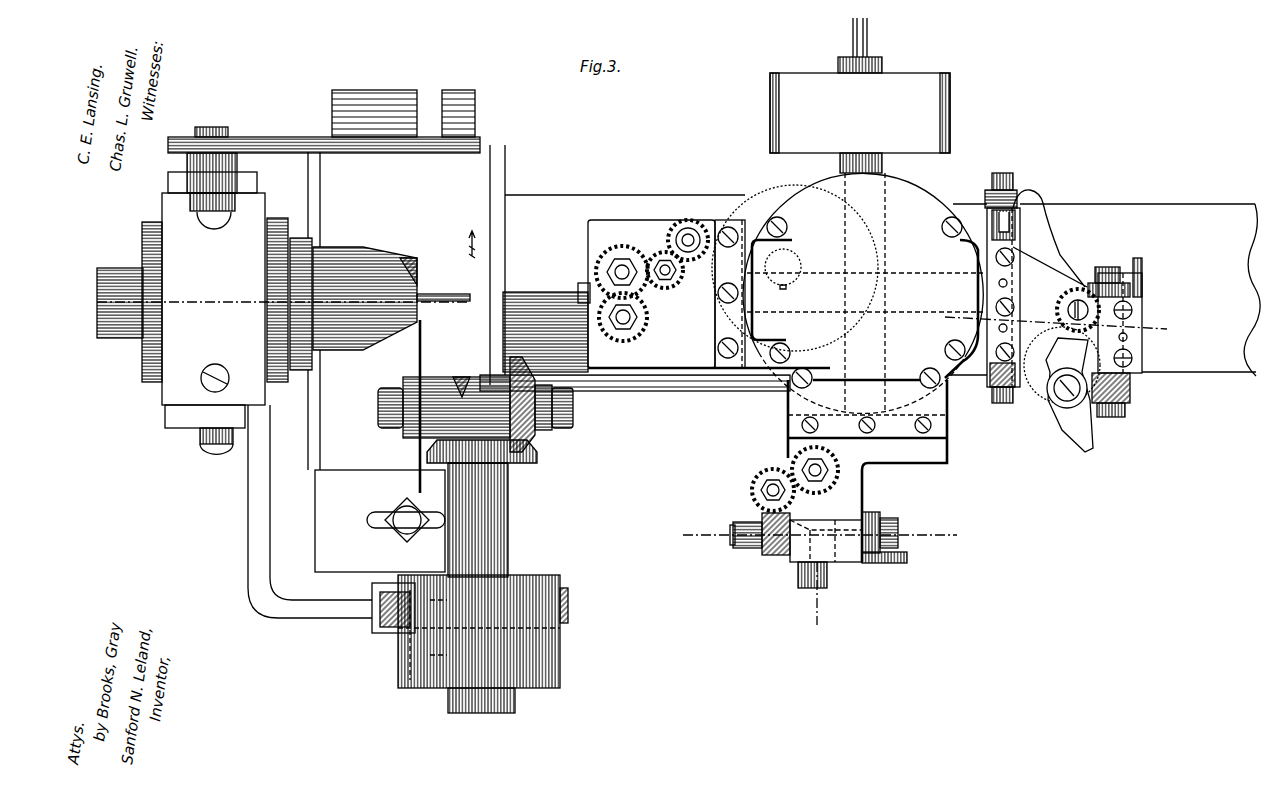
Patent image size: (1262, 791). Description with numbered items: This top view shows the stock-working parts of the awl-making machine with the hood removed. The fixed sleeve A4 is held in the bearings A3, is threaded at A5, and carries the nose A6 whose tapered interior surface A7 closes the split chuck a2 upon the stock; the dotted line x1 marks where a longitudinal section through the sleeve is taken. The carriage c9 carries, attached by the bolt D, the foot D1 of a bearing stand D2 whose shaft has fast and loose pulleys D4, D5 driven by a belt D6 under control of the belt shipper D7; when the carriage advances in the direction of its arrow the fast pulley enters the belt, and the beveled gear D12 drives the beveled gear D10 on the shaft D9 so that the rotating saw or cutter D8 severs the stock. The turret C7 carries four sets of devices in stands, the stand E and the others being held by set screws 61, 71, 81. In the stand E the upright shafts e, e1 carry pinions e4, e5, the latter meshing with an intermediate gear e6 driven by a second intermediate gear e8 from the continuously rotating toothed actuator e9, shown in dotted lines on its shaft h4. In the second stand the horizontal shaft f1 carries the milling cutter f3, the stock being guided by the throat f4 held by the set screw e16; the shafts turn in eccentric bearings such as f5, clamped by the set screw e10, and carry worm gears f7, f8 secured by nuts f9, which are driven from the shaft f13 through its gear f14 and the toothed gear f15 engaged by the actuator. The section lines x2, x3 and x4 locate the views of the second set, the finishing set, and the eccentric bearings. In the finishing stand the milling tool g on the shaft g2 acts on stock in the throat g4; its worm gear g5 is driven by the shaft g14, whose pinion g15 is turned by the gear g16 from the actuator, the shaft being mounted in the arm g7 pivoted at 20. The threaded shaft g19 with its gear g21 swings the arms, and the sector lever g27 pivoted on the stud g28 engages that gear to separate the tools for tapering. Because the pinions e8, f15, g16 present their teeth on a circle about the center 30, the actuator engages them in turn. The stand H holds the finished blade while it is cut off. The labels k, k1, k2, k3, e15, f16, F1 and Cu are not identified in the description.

The clamp bar k is at (268, 141).
The clamp screw k1 is at (215, 130).
The clamp screw stud k2 is at (190, 200).
The wires k3 is at (853, 42).
The bearings A3 is at (160, 222).
The sleeve A4 is at (143, 268).
The screw thread A5 is at (288, 220).
The nose A6 is at (360, 252).
The tapered surface A7 is at (566, 199).
The chuck a2 is at (416, 270).
The section line x1 is at (470, 297).
The carriage c9 is at (497, 170).
The bolt D is at (400, 530).
The foot D1 is at (322, 488).
The bearing stand D2 is at (509, 513).
The fast pulley D4 is at (562, 668).
The loose pulley D5 is at (561, 578).
The belt D6 is at (570, 604).
The belt shipper D7 is at (345, 617).
The cutter D8 is at (418, 372).
The cutter shaft D9 is at (460, 375).
The beveled gear D10 is at (543, 448).
The beveled gear D12 is at (524, 465).
The stand E is at (680, 360).
The upright shaft e is at (638, 318).
The upright shaft e1 is at (616, 272).
The pinion e4 is at (640, 333).
The pinion e5 is at (608, 262).
The intermediate gear e6 is at (672, 283).
The intermediate gear e8 is at (688, 222).
The toothed wheel actuator e9 is at (790, 190).
The set screw e10 is at (818, 590).
The pin e15 is at (848, 510).
The set screw e16 is at (862, 564).
The shaft f1 is at (736, 542).
The milling cutter f3 is at (750, 528).
The throat f4 is at (882, 558).
The eccentric bearing f5 is at (790, 556).
The worm toothed gear f7 is at (800, 525).
The worm toothed gear f8 is at (880, 514).
The nuts f9 is at (752, 519).
The shaft f13 is at (752, 489).
The gear f14 is at (766, 470).
The toothed gear f15 is at (838, 462).
The shaft f16 is at (577, 289).
The section line x2 is at (818, 527).
The irregular section line x3 is at (1053, 322).
The section line x4 is at (813, 600).
The stand H is at (772, 117).
The shaft h4 is at (800, 270).
The turret C7 is at (940, 200).
The center 30 is at (876, 293).
The set screws 61 is at (786, 346).
The set screws 71 is at (920, 380).
The set screws 81 is at (946, 349).
The bracket F1 is at (948, 466).
The rail Cu is at (1106, 290).
The pivot 20 is at (1008, 174).
The milling tool g is at (1120, 270).
The shaft g2 is at (1131, 385).
The throat g4 is at (1144, 280).
The worm toothed gear g5 is at (1127, 405).
The arm g7 is at (1027, 203).
The shaft g14 is at (1048, 408).
The pinion g15 is at (1050, 425).
The gear g16 is at (1028, 380).
The shaft g19 is at (1132, 312).
The toothed gear g21 is at (1078, 290).
The sector lever g27 is at (1093, 446).
The stud g28 is at (1133, 362).